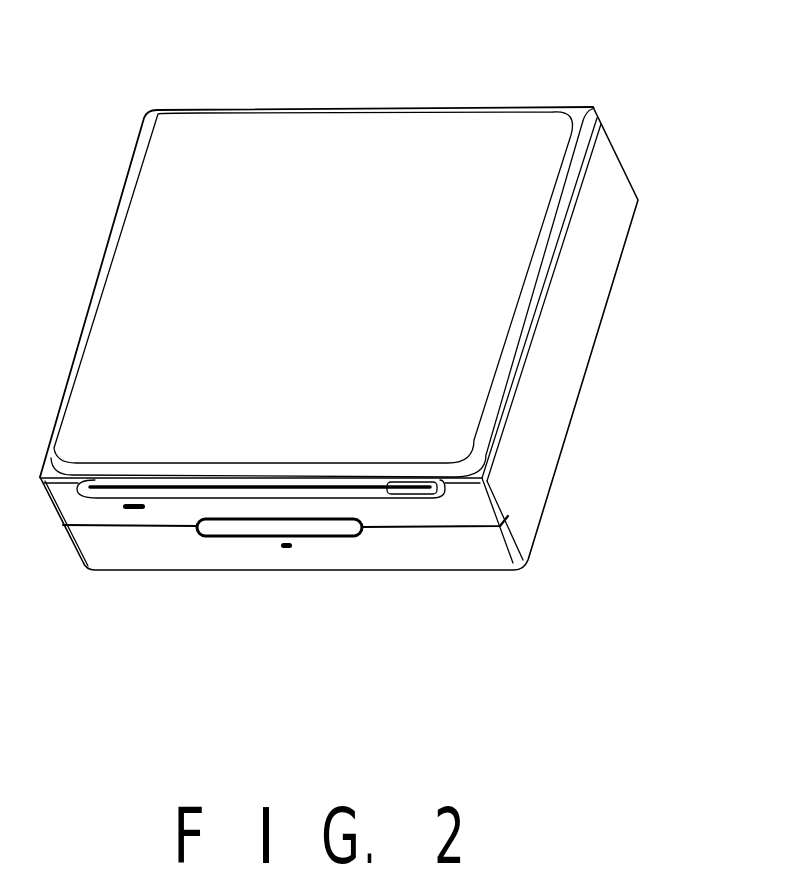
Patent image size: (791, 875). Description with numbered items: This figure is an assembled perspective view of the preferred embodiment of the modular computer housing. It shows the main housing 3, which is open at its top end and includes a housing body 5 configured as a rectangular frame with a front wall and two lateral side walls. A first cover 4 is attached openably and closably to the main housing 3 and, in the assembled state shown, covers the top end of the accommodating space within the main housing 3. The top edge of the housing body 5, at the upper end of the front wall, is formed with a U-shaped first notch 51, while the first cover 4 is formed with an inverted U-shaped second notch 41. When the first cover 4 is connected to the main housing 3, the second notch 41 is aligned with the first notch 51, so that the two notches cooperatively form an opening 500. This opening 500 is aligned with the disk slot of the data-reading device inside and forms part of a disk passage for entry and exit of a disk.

The main housing 3 is at (394, 340).
The first cover 4 is at (448, 127).
The housing body 5 is at (339, 387).
The second notch 41 is at (388, 490).
The first notch 51 is at (361, 497).
The opening 500 is at (188, 492).